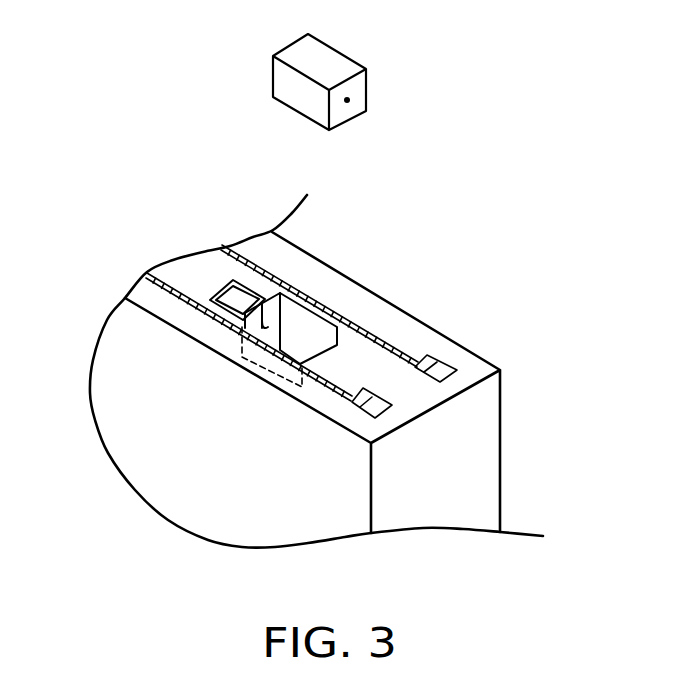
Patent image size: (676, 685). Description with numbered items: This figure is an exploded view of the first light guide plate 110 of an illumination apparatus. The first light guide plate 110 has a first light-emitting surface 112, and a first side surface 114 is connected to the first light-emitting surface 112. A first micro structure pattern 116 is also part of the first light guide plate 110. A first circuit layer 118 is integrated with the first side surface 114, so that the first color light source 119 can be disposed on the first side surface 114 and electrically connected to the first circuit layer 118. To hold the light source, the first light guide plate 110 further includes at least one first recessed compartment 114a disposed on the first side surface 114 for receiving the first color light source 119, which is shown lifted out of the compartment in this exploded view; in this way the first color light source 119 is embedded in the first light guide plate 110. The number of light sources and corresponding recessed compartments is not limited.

The first light guide plate 110 is at (616, 564).
The first light-emitting surface 112 is at (143, 436).
The first side surface 114 is at (197, 257).
The first recessed compartment 114a is at (311, 311).
The first micro structure pattern 116 is at (510, 418).
The first circuit layer 118 is at (408, 352).
The first color light source 119 is at (347, 67).